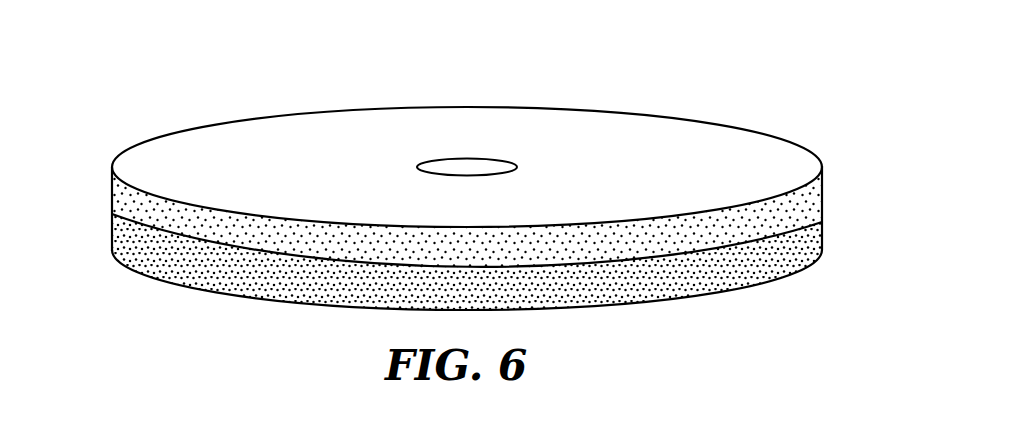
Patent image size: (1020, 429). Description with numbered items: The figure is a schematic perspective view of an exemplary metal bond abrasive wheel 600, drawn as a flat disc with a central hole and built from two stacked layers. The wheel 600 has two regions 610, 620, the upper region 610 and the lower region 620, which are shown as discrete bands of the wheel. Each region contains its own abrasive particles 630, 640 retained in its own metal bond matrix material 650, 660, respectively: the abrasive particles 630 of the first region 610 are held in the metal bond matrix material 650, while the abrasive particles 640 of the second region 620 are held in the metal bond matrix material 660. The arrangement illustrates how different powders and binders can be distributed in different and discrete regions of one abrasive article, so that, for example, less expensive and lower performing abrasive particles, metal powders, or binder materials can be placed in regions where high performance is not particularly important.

The metal bond abrasive wheel 600 is at (275, 72).
The first region 610 is at (111, 187).
The second region 620 is at (111, 238).
The abrasive particles 630 is at (802, 198).
The metal bond matrix material 650 is at (810, 213).
The metal bond matrix material 660 is at (812, 236).
The abrasive particles 640 is at (798, 250).